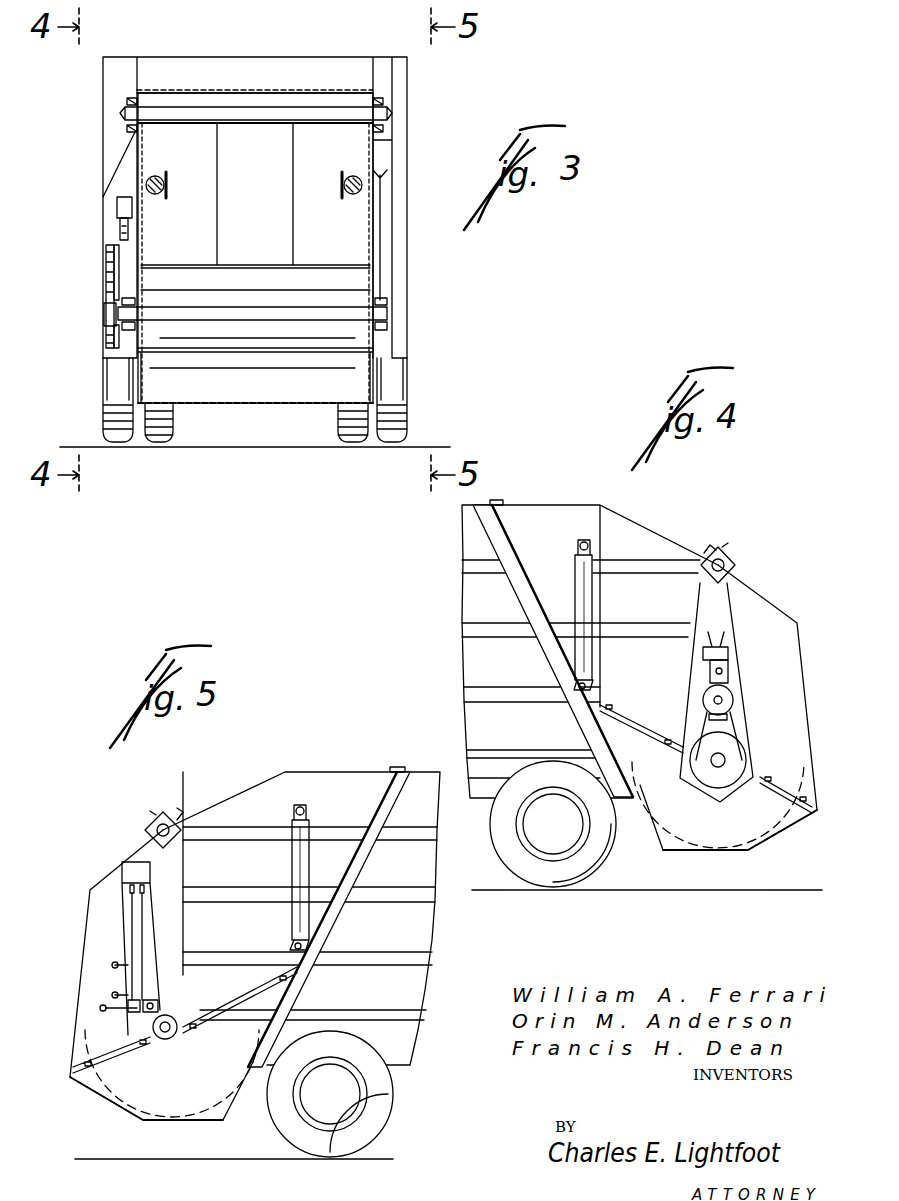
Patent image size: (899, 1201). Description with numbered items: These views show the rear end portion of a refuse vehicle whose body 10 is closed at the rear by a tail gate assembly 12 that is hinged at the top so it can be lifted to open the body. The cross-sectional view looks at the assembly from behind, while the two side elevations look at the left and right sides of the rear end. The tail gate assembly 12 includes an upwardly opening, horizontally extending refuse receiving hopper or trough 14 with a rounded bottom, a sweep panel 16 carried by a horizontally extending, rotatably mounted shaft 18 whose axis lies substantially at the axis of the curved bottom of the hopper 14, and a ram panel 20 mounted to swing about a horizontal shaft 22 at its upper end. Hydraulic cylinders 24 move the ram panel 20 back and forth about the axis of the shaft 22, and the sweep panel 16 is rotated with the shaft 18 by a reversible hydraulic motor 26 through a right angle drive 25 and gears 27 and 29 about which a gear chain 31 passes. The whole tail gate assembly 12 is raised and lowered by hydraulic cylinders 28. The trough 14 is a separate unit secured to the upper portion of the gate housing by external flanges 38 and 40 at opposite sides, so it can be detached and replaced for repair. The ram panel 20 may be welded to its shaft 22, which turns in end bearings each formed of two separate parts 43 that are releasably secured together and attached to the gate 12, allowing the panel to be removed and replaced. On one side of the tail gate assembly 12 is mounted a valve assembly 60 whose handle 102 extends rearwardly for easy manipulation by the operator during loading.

In FIG. 3, the body 10 is at (307, 57).
In FIG. 4, the body 10 is at (470, 655).
In FIG. 5, the body 10 is at (415, 933).
In FIG. 3, the tail gate assembly 12 is at (293, 411).
In FIG. 4, the tail gate assembly 12 is at (763, 580).
In FIG. 5, the tail gate assembly 12 is at (102, 874).
In FIG. 3, the refuse receiving hopper or trough 14 is at (325, 406).
In FIG. 3, the sweep panel 16 is at (230, 386).
In FIG. 3, the shaft 18 is at (262, 305).
In FIG. 4, the shaft 18 is at (727, 758).
In FIG. 3, the ram panel 20 is at (340, 263).
In FIG. 3, the shaft 22 is at (390, 113).
In FIG. 4, the shaft 22 is at (730, 560).
In FIG. 5, the shaft 22 is at (160, 818).
In FIG. 3, the hydraulic cylinders 24 is at (157, 176).
In FIG. 3, the right angle drive 25 is at (120, 238).
In FIG. 4, the right angle drive 25 is at (728, 670).
In FIG. 3, the reversible hydraulic motor 26 is at (117, 206).
In FIG. 4, the reversible hydraulic motor 26 is at (728, 650).
In FIG. 3, the gear 27 is at (107, 263).
In FIG. 4, the gear 27 is at (732, 700).
In FIG. 4, the hydraulic cylinders 28 is at (574, 580).
In FIG. 5, the hydraulic cylinders 28 is at (312, 850).
In FIG. 3, the gear 29 is at (105, 328).
In FIG. 4, the gear 29 is at (712, 775).
In FIG. 5, the gear 29 is at (165, 1027).
In FIG. 3, the gear chain 31 is at (107, 284).
In FIG. 4, the gear chain 31 is at (745, 715).
In FIG. 4, the external flange 38 is at (778, 790).
In FIG. 5, the external flange 38 is at (232, 1010).
In FIG. 4, the external flange 40 is at (800, 790).
In FIG. 5, the external flange 40 is at (223, 1005).
In FIG. 3, the bearing parts 43 is at (127, 128).
In FIG. 4, the bearing parts 43 is at (712, 553).
In FIG. 5, the bearing parts 43 is at (173, 820).
In FIG. 5, the valve assembly 60 is at (140, 851).
In FIG. 5, the handle 102 is at (104, 1005).